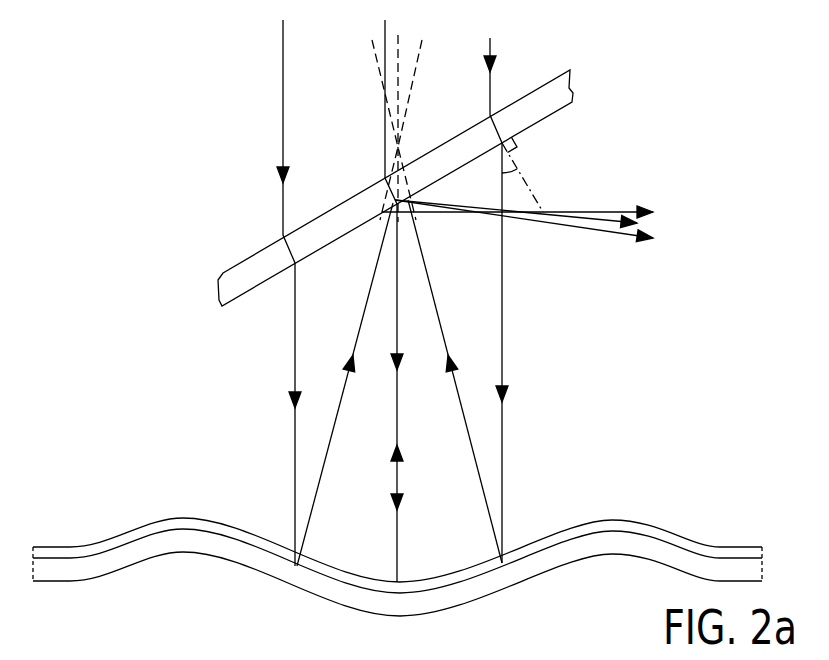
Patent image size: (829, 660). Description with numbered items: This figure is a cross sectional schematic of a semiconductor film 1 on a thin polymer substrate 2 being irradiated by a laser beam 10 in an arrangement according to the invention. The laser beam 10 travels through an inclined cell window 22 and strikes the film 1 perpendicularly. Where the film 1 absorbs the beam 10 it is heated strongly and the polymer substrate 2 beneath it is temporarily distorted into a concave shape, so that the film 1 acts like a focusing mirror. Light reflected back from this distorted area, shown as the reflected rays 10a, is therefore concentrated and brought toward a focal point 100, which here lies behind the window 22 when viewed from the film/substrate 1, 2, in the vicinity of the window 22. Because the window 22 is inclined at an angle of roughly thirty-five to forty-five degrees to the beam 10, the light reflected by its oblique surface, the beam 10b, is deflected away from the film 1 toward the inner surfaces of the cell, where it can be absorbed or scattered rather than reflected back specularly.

The semiconductor film 1 is at (70, 550).
The polymer substrate 2 is at (110, 562).
The laser beam 10 is at (283, 87).
The reflected beam 10a is at (320, 453).
The beam reflected by window 10b is at (571, 214).
The window 22 is at (240, 268).
The focal point 100 is at (398, 147).